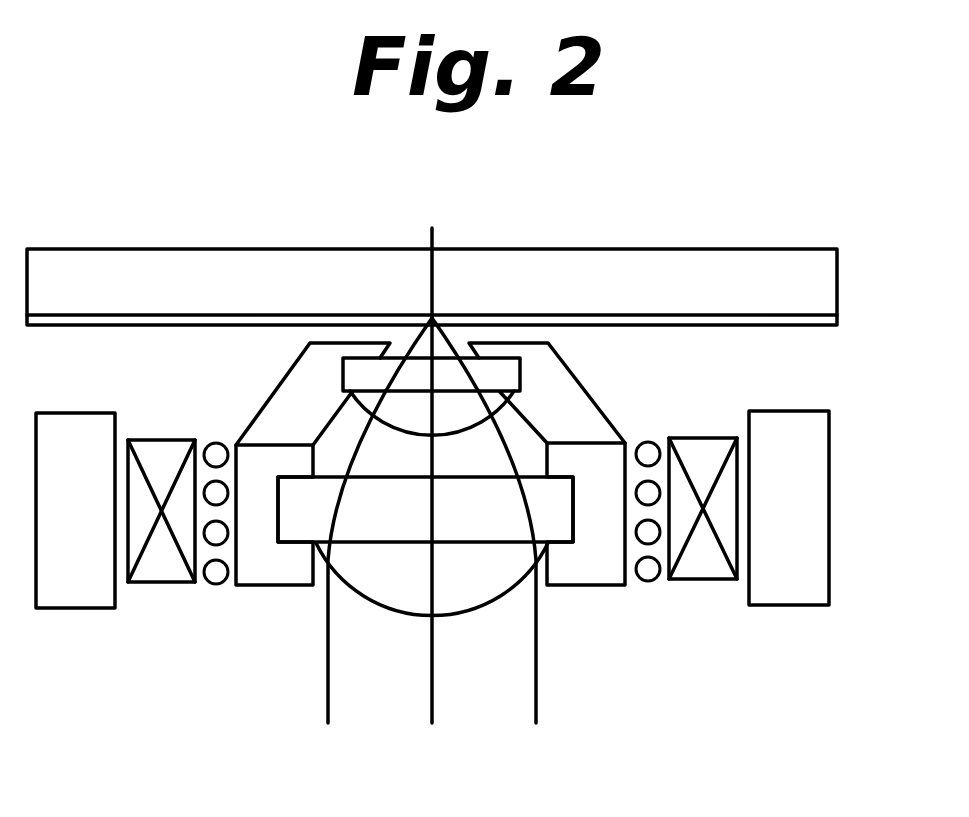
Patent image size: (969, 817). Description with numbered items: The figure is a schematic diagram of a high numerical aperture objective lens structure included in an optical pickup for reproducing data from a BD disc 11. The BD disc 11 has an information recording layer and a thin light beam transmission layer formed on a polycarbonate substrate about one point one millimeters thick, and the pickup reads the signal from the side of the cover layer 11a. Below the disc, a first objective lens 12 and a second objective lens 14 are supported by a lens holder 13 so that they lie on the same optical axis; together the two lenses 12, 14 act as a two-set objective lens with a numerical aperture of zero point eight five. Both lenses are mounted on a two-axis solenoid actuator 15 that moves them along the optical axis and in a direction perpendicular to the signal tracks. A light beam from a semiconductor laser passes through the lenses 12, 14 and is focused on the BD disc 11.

The BD disc 11 is at (760, 249).
The cover layer 11a is at (795, 325).
The first objective lens 12 is at (360, 373).
The lens holder 13 is at (270, 584).
The second objective lens 14 is at (478, 577).
The two-axis solenoid actuator 15 is at (704, 608).